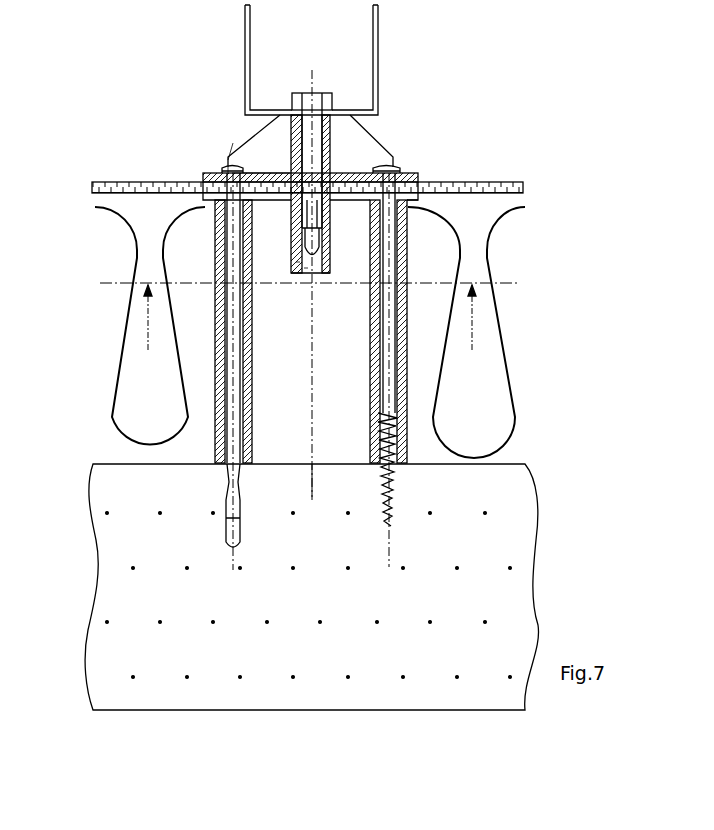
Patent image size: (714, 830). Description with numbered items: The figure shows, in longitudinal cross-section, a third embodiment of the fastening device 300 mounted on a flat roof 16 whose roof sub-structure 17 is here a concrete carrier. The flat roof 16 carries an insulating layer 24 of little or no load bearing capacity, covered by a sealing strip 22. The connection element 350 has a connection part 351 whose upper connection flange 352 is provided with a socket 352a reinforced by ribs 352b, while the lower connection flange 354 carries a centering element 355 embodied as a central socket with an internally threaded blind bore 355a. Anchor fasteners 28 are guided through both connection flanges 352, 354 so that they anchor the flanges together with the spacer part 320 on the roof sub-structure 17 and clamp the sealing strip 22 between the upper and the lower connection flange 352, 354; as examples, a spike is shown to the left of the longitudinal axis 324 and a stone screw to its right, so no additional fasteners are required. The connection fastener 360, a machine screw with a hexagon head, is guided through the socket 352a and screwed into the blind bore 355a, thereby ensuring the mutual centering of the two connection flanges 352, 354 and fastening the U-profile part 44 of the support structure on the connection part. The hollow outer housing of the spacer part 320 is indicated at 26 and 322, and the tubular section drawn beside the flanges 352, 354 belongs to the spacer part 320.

The U-profile part 44 is at (380, 63).
The connection fastener 360 is at (314, 100).
The connection element 350 is at (223, 123).
The connection part 351 is at (390, 133).
The upper connection flange 352 is at (410, 178).
The socket 352a is at (290, 148).
The ribs 352b is at (233, 143).
The sealing strip 22 is at (495, 182).
The sleeve top 26 is at (220, 220).
The anchor fasteners 28 is at (230, 240).
The lower connection flange 354 is at (415, 197).
The spacer part 320 is at (418, 263).
The fastening device 300 is at (527, 330).
The left tube 322 is at (220, 405).
The insulating layer 24 is at (492, 402).
The flat roof 16 is at (558, 500).
The roof sub-structure 17 is at (503, 612).
The centering element 355 is at (298, 262).
The blind bore 355a is at (306, 268).
The longitudinal axis 324 is at (312, 497).